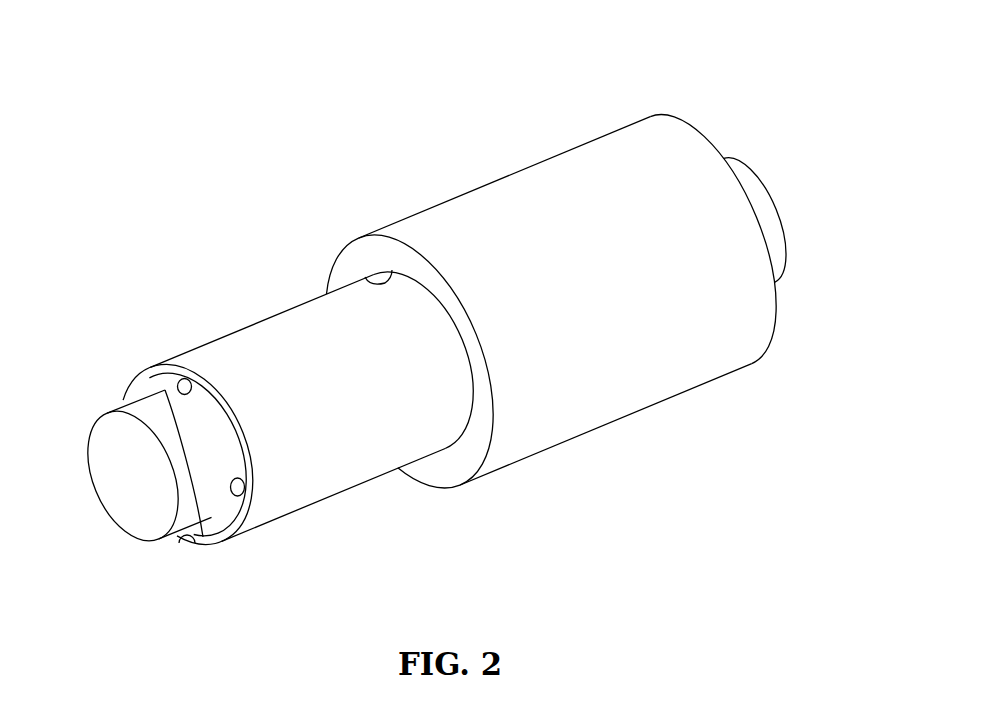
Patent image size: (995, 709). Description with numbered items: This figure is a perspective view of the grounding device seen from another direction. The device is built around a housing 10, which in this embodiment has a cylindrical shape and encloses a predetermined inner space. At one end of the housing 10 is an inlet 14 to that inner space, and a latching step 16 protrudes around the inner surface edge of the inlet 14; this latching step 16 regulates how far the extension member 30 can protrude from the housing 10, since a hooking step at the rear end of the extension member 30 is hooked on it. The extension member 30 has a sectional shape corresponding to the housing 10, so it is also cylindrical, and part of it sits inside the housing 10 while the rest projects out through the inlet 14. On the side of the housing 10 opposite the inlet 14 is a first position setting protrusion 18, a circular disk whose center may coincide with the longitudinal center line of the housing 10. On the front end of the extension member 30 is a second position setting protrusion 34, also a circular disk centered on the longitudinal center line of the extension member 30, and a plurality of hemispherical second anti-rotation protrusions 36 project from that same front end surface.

The housing 10 is at (514, 160).
The inlet 14 is at (370, 282).
The latching step 16 is at (462, 470).
The first position setting protrusion 18 is at (758, 190).
The extension member 30 is at (226, 310).
The second position setting protrusion 34 is at (143, 507).
The second anti-rotation protrusion 36 is at (222, 545).